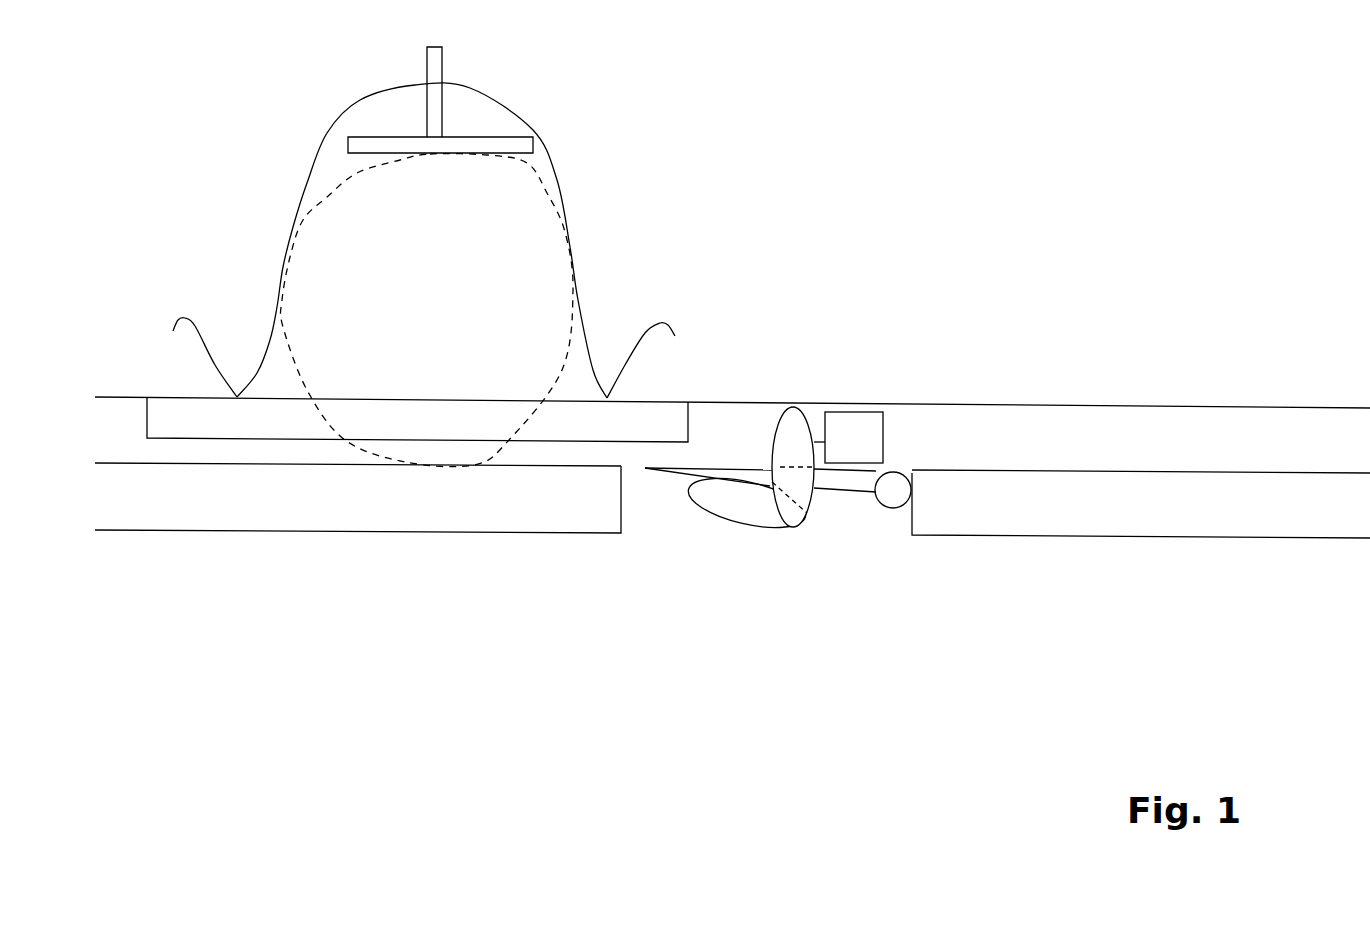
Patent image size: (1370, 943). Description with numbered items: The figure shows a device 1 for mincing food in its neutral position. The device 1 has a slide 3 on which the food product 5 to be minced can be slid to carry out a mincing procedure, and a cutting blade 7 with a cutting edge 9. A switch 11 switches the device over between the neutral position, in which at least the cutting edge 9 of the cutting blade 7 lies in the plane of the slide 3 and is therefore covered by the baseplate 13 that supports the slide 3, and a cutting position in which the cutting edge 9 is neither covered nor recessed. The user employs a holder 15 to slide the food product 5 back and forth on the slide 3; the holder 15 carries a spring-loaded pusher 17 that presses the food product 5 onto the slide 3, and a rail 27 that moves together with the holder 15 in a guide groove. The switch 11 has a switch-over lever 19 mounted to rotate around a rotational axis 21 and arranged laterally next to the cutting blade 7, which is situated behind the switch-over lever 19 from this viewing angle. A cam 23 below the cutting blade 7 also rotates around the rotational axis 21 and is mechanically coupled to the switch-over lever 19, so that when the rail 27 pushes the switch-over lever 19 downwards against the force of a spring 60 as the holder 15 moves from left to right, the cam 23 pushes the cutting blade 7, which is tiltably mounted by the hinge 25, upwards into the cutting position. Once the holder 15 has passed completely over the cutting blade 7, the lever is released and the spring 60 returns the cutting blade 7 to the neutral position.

The device for mincing food 1 is at (902, 145).
The slide 3 is at (135, 462).
The food product 5 is at (330, 232).
The cutting blade 7 is at (833, 481).
The cutting edge 9 is at (641, 470).
The switch 11 is at (793, 645).
The baseplate 13 is at (385, 504).
The holder 15 is at (562, 185).
The spring-loaded pusher 17 is at (442, 118).
The switch-over lever 19 is at (797, 447).
The rotational axis 21 is at (807, 523).
The cam 23 is at (740, 507).
The hinge 25 is at (900, 482).
The rail 27 is at (660, 415).
The spring 60 is at (848, 437).